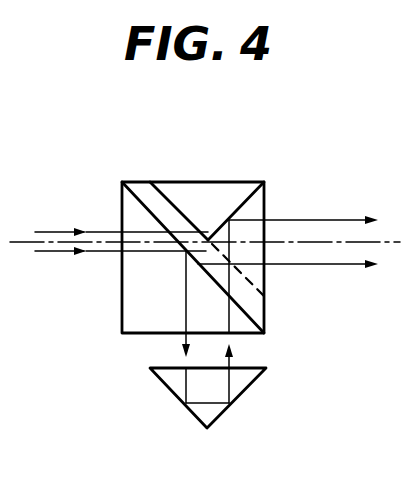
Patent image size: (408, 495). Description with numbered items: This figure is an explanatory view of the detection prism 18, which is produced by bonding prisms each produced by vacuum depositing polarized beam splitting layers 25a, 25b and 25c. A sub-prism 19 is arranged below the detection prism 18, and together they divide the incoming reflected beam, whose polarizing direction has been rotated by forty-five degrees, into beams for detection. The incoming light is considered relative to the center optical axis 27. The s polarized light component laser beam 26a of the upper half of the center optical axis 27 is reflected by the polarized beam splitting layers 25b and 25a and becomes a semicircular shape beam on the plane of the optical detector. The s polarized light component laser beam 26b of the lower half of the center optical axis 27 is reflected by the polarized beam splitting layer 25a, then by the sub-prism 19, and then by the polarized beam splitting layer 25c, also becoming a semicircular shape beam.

The detecting prism 18 is at (203, 181).
The sub-prism 19 is at (194, 418).
The polarized beam splitting layer 25a is at (207, 273).
The polarized beam splitting layer 25b is at (164, 192).
The polarized beam splitting layer 25c is at (250, 190).
The laser beam 26a is at (59, 231).
The laser beam 26b is at (62, 254).
The center optical axis 27 is at (22, 244).